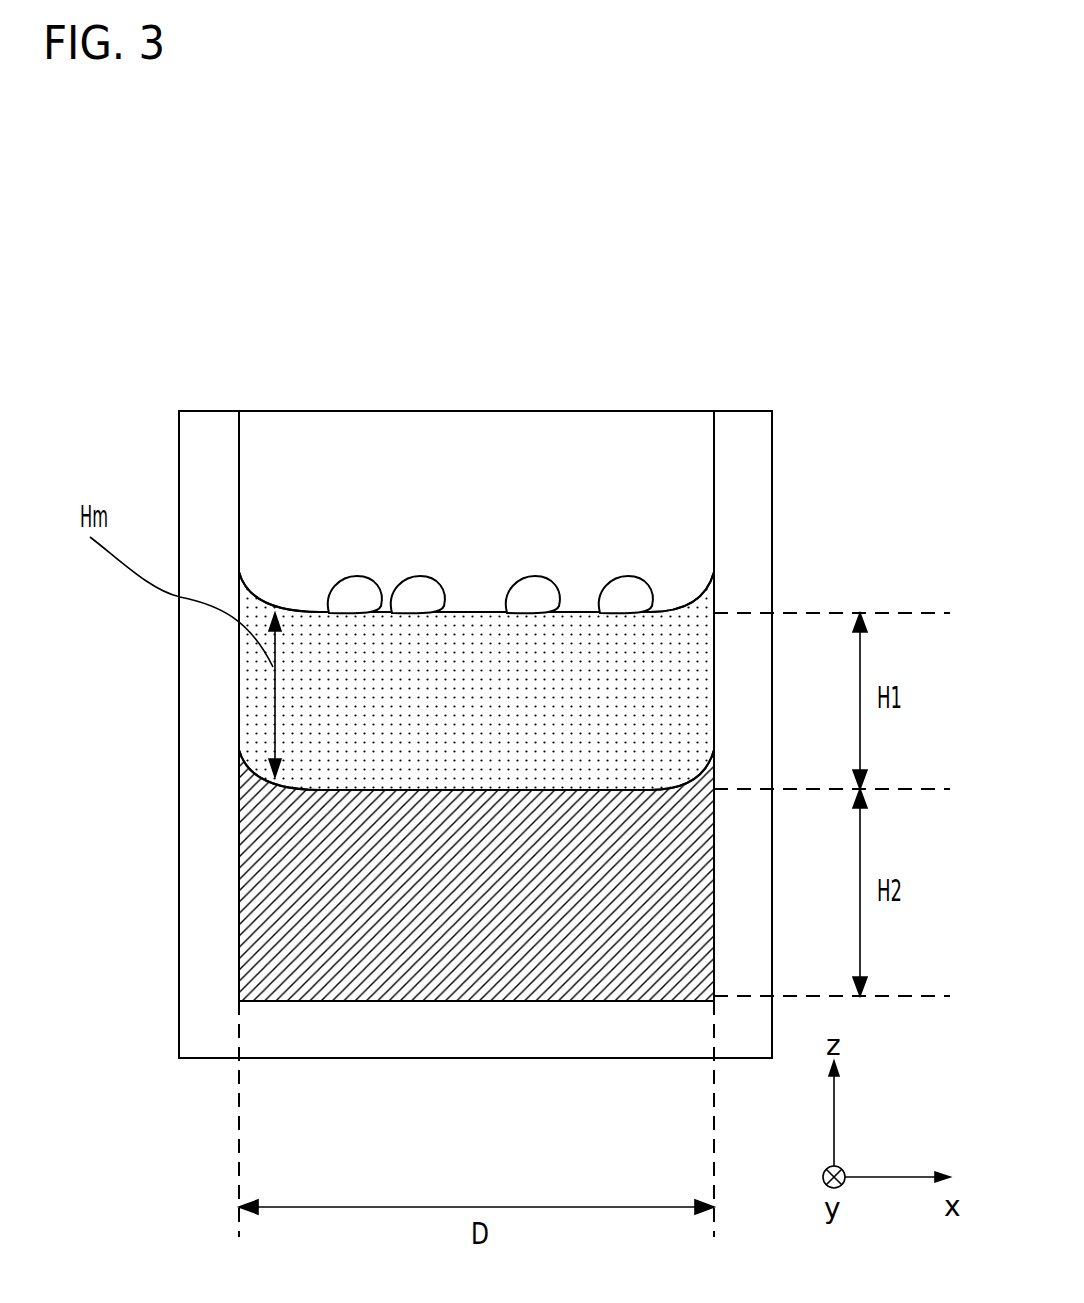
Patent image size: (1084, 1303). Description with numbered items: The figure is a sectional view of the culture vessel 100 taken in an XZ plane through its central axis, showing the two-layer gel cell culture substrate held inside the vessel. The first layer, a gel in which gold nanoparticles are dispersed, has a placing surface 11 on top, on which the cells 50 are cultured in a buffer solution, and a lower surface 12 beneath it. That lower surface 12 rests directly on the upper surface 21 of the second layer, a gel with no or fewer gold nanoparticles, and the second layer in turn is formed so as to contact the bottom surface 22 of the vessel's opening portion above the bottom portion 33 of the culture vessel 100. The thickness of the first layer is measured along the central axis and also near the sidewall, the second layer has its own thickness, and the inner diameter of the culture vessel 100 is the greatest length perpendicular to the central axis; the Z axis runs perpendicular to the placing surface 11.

The culture vessel 100 is at (812, 351).
The placing surface 11 is at (316, 613).
The lower surface 12 is at (395, 790).
The upper surface 21 is at (395, 790).
The bottom surface 22 is at (287, 1002).
The bottom portion 33 is at (572, 1030).
The cells 50 is at (628, 590).